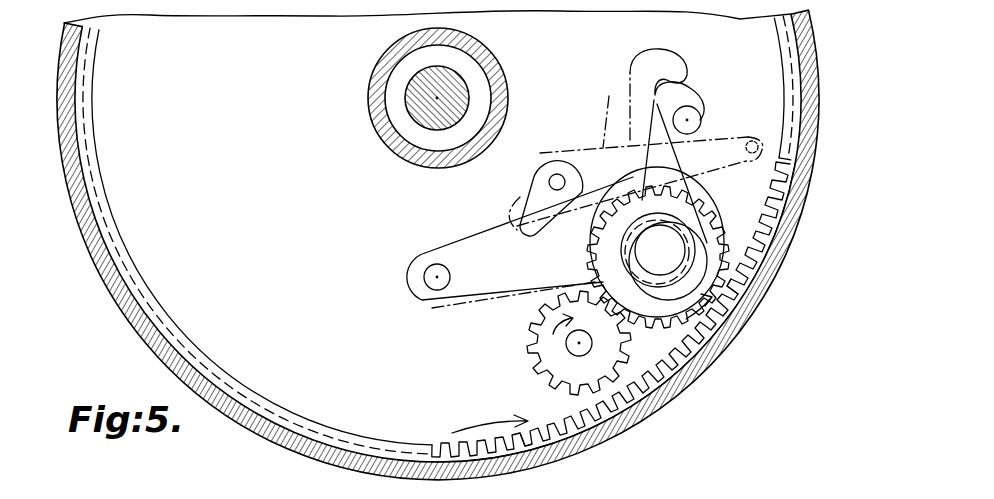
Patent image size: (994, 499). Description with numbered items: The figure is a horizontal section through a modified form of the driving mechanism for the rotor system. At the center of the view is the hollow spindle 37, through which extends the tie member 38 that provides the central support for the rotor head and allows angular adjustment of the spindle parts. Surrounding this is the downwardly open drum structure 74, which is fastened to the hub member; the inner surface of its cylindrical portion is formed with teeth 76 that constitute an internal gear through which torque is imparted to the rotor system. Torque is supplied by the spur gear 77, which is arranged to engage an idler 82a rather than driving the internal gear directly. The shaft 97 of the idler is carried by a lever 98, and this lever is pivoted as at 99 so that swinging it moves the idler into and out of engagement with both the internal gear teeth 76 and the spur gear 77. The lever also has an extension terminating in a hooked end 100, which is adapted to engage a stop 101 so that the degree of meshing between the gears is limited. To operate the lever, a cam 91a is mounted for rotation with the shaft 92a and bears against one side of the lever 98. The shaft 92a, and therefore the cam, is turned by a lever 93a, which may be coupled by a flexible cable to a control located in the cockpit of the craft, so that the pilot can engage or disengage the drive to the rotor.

The hollow spindle 37 is at (382, 131).
The tie member 38 is at (406, 93).
The drum structure 74 is at (684, 388).
The teeth 76 is at (540, 433).
The spur gear 77 is at (555, 356).
The idler 82a is at (727, 232).
The cam 91a is at (533, 200).
The shaft 92a is at (556, 175).
The lever 93a is at (597, 112).
The shaft 97 is at (658, 257).
The lever 98 is at (492, 260).
The pivot 99 is at (437, 282).
The hooked end 100 is at (693, 95).
The stop 101 is at (699, 122).